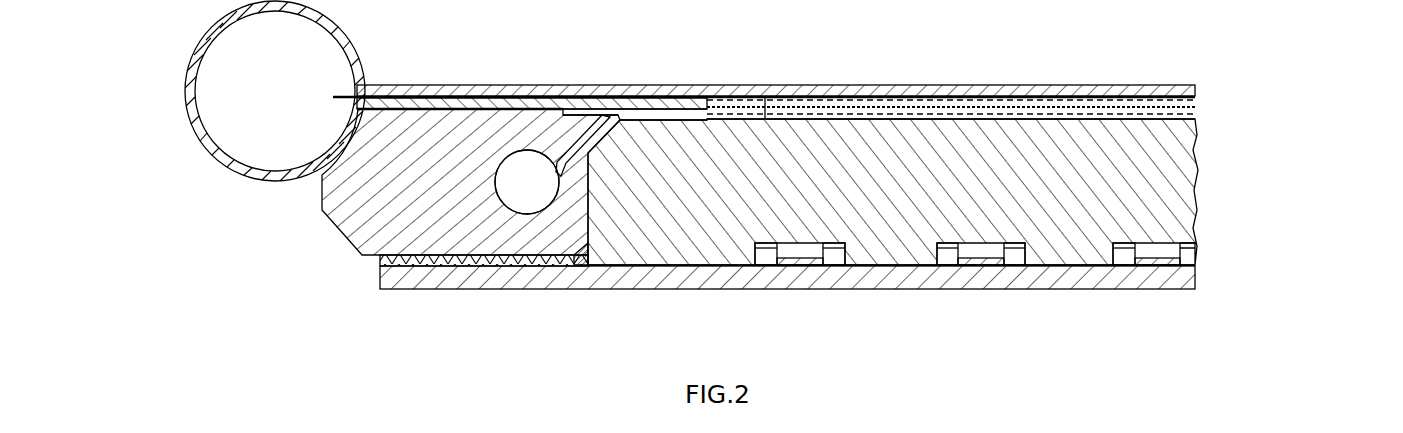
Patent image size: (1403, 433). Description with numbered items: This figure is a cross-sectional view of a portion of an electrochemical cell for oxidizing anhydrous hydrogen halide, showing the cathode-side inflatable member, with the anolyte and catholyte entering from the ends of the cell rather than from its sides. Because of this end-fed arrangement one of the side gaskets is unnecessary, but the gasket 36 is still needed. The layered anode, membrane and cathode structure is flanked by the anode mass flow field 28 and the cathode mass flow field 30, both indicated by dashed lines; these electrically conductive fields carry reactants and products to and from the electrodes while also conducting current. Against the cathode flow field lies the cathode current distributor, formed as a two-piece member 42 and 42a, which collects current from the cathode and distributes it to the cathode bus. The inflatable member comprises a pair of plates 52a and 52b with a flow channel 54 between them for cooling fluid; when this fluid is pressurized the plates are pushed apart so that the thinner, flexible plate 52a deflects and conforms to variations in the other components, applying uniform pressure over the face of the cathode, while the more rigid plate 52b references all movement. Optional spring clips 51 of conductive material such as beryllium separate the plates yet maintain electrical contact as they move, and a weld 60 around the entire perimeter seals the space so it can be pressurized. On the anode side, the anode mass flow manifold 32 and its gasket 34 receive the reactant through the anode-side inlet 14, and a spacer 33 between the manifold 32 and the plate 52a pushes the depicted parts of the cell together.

The anode-side inlet 14 is at (525, 165).
The anode mass flow field 28 is at (1198, 115).
The cathode mass flow field 30 is at (1198, 100).
The anode mass flow manifold 32 is at (342, 232).
The spacer 33 is at (380, 263).
The gasket 34 is at (220, 160).
The gasket 36 is at (650, 120).
The cathode current distributor 42 is at (1160, 85).
The cathode current distributor second piece 42a is at (422, 107).
The spring clips 51 is at (766, 250).
The flexible plate 52a is at (1198, 279).
The plate 52b is at (1198, 222).
The flow channel 54 is at (806, 262).
The weld 60 is at (581, 268).